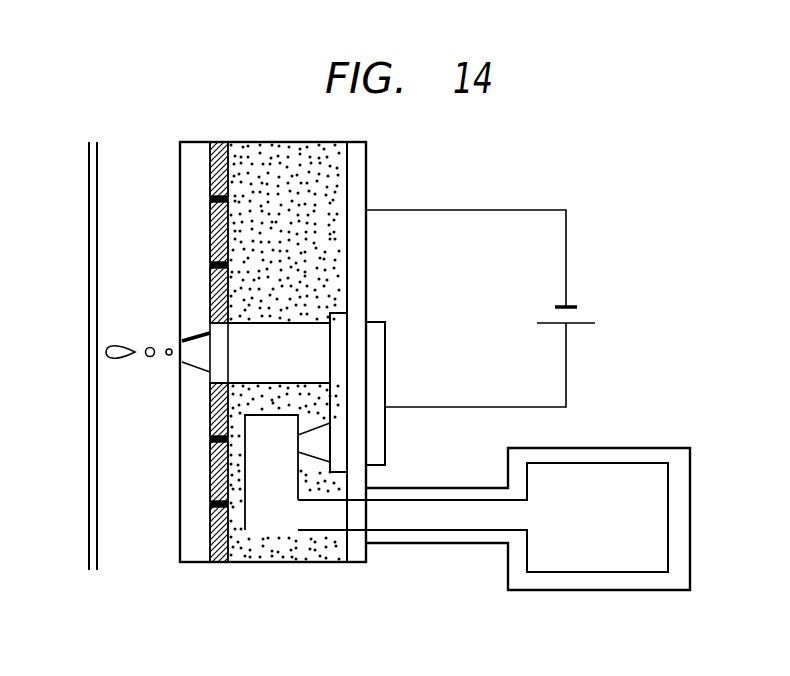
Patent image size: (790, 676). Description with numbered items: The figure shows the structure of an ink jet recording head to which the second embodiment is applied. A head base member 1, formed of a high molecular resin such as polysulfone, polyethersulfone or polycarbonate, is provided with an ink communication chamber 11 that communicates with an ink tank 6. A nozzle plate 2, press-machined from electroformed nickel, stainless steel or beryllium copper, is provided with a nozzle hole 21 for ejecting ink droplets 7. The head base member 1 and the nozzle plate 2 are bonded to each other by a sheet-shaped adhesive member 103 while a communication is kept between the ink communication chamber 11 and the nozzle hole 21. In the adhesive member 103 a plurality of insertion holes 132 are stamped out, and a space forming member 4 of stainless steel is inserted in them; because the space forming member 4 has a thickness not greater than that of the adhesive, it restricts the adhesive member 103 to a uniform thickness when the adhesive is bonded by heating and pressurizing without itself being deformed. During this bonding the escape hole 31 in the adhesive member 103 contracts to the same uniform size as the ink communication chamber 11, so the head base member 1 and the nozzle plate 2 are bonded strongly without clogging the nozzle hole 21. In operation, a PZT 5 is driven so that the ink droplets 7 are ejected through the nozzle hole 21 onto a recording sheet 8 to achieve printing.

The head base member 1 is at (315, 553).
The nozzle plate 2 is at (193, 547).
The space forming member 4 is at (210, 468).
The PZT 5 is at (372, 337).
The ink tank 6 is at (643, 458).
The ink droplets 7 is at (110, 348).
The recording sheet 8 is at (88, 193).
The ink communication chamber 11 is at (331, 334).
The nozzle hole 21 is at (202, 357).
The escape hole 31 is at (208, 338).
The adhesive member 103 is at (210, 523).
The insertion holes 132 is at (210, 200).